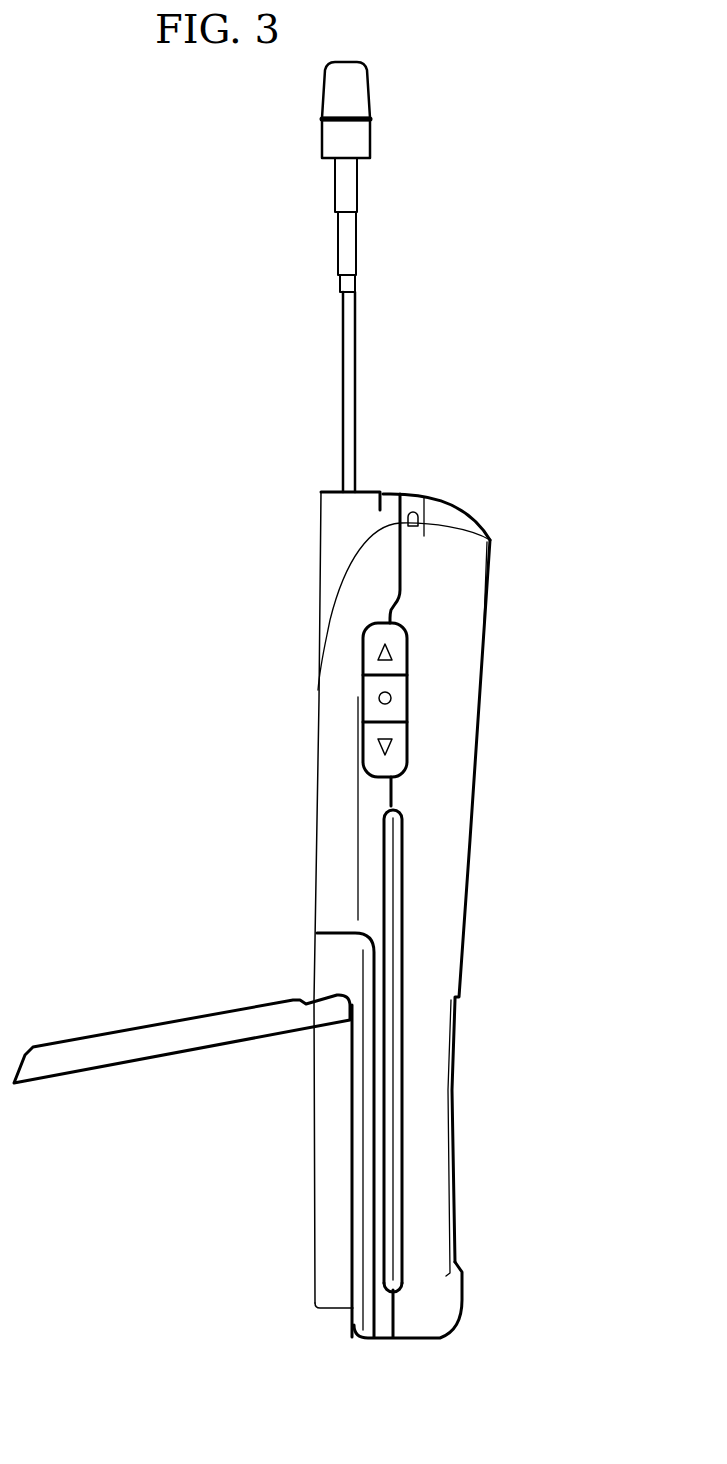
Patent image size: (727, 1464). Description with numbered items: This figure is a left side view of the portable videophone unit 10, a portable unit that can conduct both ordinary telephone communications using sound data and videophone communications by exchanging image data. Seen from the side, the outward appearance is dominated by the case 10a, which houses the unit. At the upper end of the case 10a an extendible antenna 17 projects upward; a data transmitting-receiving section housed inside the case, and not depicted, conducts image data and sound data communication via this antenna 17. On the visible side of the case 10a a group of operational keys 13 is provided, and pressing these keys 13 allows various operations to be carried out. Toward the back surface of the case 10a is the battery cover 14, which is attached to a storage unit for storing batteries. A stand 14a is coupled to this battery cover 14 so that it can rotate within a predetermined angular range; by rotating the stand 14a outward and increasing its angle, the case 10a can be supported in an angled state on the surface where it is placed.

The portable videophone unit 10 is at (488, 440).
The case 10a is at (473, 818).
The operational keys 13 is at (365, 657).
The battery cover 14 is at (327, 1188).
The stand 14a is at (158, 1038).
The extendible antenna 17 is at (360, 142).